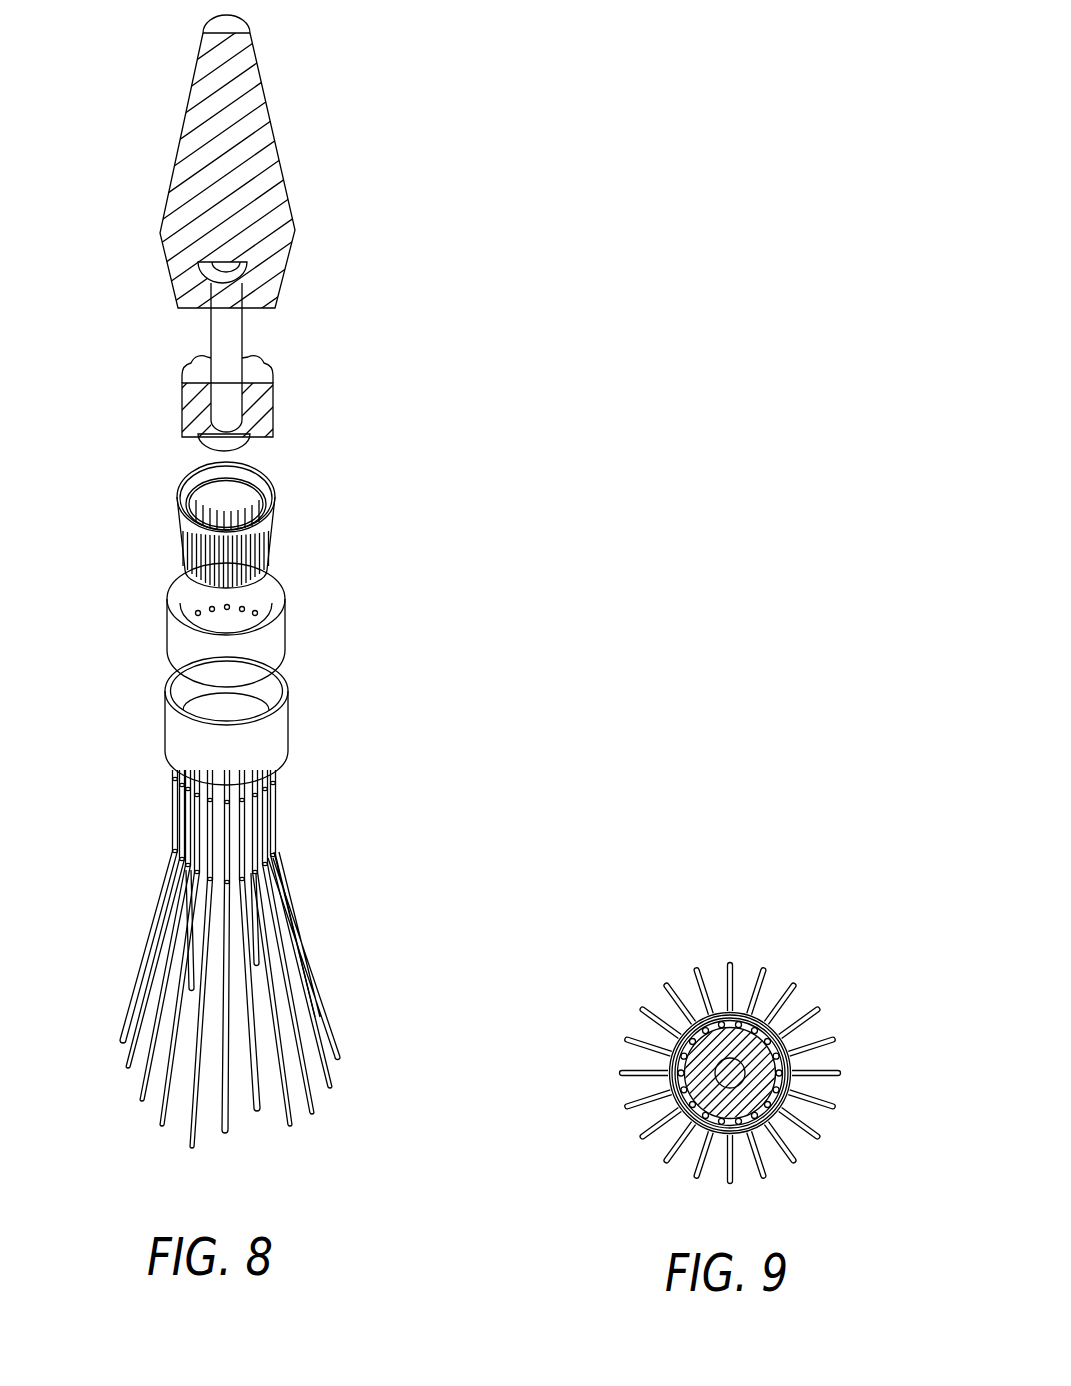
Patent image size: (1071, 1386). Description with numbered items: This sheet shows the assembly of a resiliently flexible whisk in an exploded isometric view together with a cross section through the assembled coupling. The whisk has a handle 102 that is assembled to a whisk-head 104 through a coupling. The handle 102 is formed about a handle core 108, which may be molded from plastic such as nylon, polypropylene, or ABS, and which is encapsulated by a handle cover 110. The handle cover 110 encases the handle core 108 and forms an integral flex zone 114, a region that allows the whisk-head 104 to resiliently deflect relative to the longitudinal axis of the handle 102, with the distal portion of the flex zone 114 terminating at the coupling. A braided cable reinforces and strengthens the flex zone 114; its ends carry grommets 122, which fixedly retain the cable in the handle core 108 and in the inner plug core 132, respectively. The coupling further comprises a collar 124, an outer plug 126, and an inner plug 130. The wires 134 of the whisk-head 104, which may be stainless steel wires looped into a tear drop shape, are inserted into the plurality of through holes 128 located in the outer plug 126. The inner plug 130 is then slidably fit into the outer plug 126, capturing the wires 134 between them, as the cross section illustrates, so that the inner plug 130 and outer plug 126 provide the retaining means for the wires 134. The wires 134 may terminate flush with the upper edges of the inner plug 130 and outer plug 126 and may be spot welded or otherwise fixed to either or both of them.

In FIG. 9, the handle 102 is at (745, 1012).
In FIG. 8, the whisk-head 104 is at (362, 838).
In FIG. 9, the whisk-head 104 is at (841, 1042).
In FIG. 8, the handle core 108 is at (258, 152).
In FIG. 9, the handle cover 110 is at (745, 1058).
In FIG. 8, the flex zone 114 is at (173, 312).
In FIG. 8, the grommets 122 is at (240, 285).
In FIG. 8, the collar 124 is at (176, 726).
In FIG. 9, the collar 124 is at (701, 1131).
In FIG. 8, the outer plug 126 is at (178, 626).
In FIG. 9, the outer plug 126 is at (686, 1044).
In FIG. 8, the through holes 128 is at (250, 605).
In FIG. 8, the inner plug 130 is at (183, 520).
In FIG. 9, the inner plug 130 is at (685, 1093).
In FIG. 8, the inner plug core 132 is at (258, 400).
In FIG. 9, the inner plug core 132 is at (690, 1050).
In FIG. 8, the wires 134 is at (180, 795).
In FIG. 9, the wires 134 is at (654, 1062).